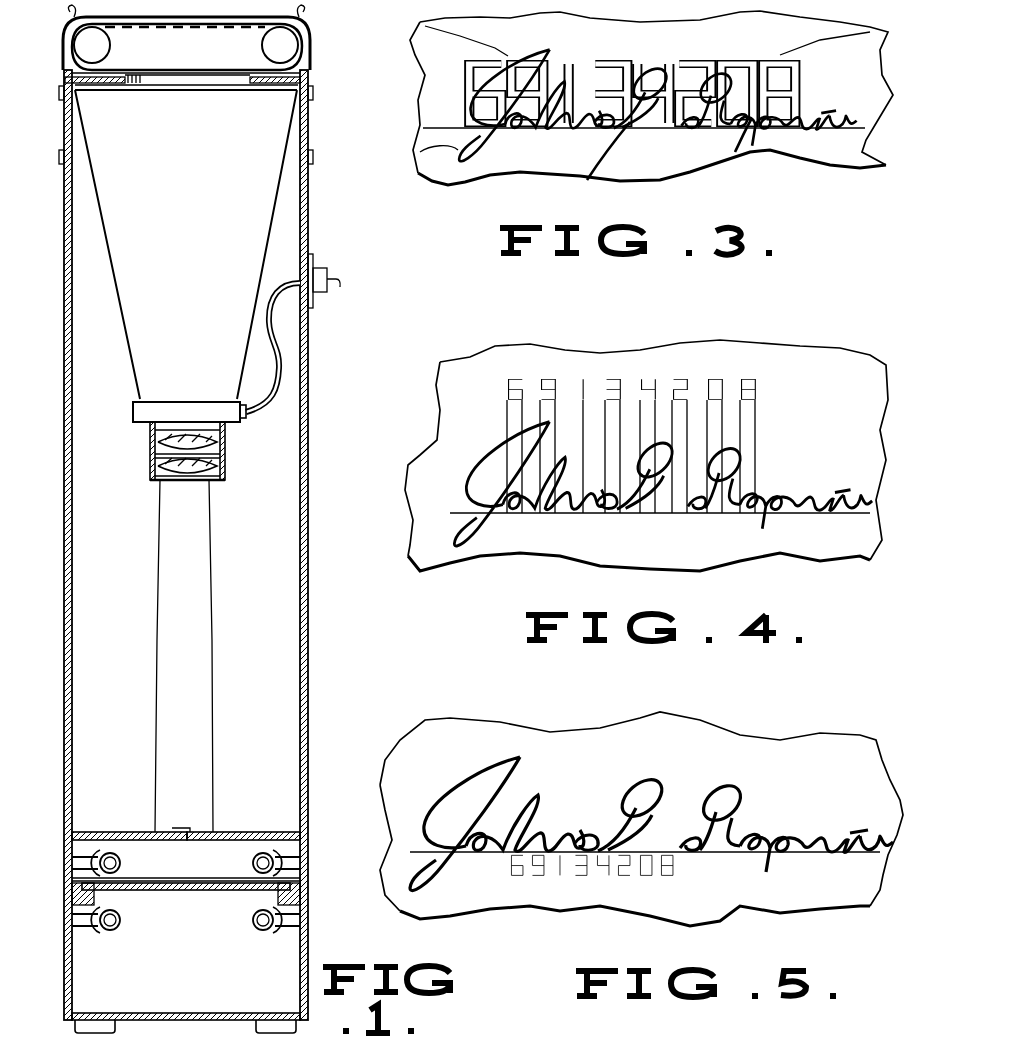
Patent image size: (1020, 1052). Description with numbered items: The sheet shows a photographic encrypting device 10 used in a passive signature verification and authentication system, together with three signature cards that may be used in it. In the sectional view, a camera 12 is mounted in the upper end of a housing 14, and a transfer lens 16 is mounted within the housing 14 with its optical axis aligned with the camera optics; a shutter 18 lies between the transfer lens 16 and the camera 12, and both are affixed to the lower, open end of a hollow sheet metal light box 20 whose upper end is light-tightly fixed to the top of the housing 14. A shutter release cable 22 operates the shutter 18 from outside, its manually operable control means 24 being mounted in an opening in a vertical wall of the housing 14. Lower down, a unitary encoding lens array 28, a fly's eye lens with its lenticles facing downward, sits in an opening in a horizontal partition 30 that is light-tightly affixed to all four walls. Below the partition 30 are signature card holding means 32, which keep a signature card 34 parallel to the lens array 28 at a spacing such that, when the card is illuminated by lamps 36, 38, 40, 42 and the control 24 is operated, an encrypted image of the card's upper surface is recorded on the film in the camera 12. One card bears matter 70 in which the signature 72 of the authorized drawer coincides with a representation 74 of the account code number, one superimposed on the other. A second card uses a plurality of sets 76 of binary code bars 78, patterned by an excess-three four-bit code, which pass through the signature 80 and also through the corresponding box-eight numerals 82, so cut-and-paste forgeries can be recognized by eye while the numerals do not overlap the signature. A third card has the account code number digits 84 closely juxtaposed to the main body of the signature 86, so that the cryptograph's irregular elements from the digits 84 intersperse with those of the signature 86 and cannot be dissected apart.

In FIG. 1, the photographic encrypting device 10 is at (322, 641).
In FIG. 1, the camera 12 is at (245, 52).
In FIG. 1, the housing 14 is at (303, 598).
In FIG. 1, the transfer lens 16 is at (192, 468).
In FIG. 1, the shutter 18 is at (234, 419).
In FIG. 1, the light box 20 is at (255, 230).
In FIG. 1, the shutter release cable 22 is at (282, 355).
In FIG. 1, the manually operable control means 24 is at (340, 287).
In FIG. 1, the encoding lens array 28 is at (160, 832).
In FIG. 1, the horizontal partition 30 is at (263, 832).
In FIG. 1, the signature card holding means 32 is at (157, 900).
In FIG. 1, the signature card 34 is at (276, 889).
In FIG. 1, the lamp 36 is at (96, 862).
In FIG. 1, the lamp 38 is at (277, 859).
In FIG. 1, the lamp 40 is at (72, 922).
In FIG. 1, the lamp 42 is at (280, 931).
In FIG. 3, the signature card matter 70 is at (640, 163).
In FIG. 3, the signature 72 is at (418, 158).
In FIG. 3, the account code number representation 74 is at (447, 28).
In FIG. 4, the sets of binary code bars 76 is at (483, 426).
In FIG. 4, the binary code bars 78 is at (505, 400).
In FIG. 4, the signature 80 is at (583, 500).
In FIG. 4, the box-eight numerals 82 is at (515, 378).
In FIG. 5, the account code number digits 84 is at (510, 866).
In FIG. 5, the signature 86 is at (630, 773).